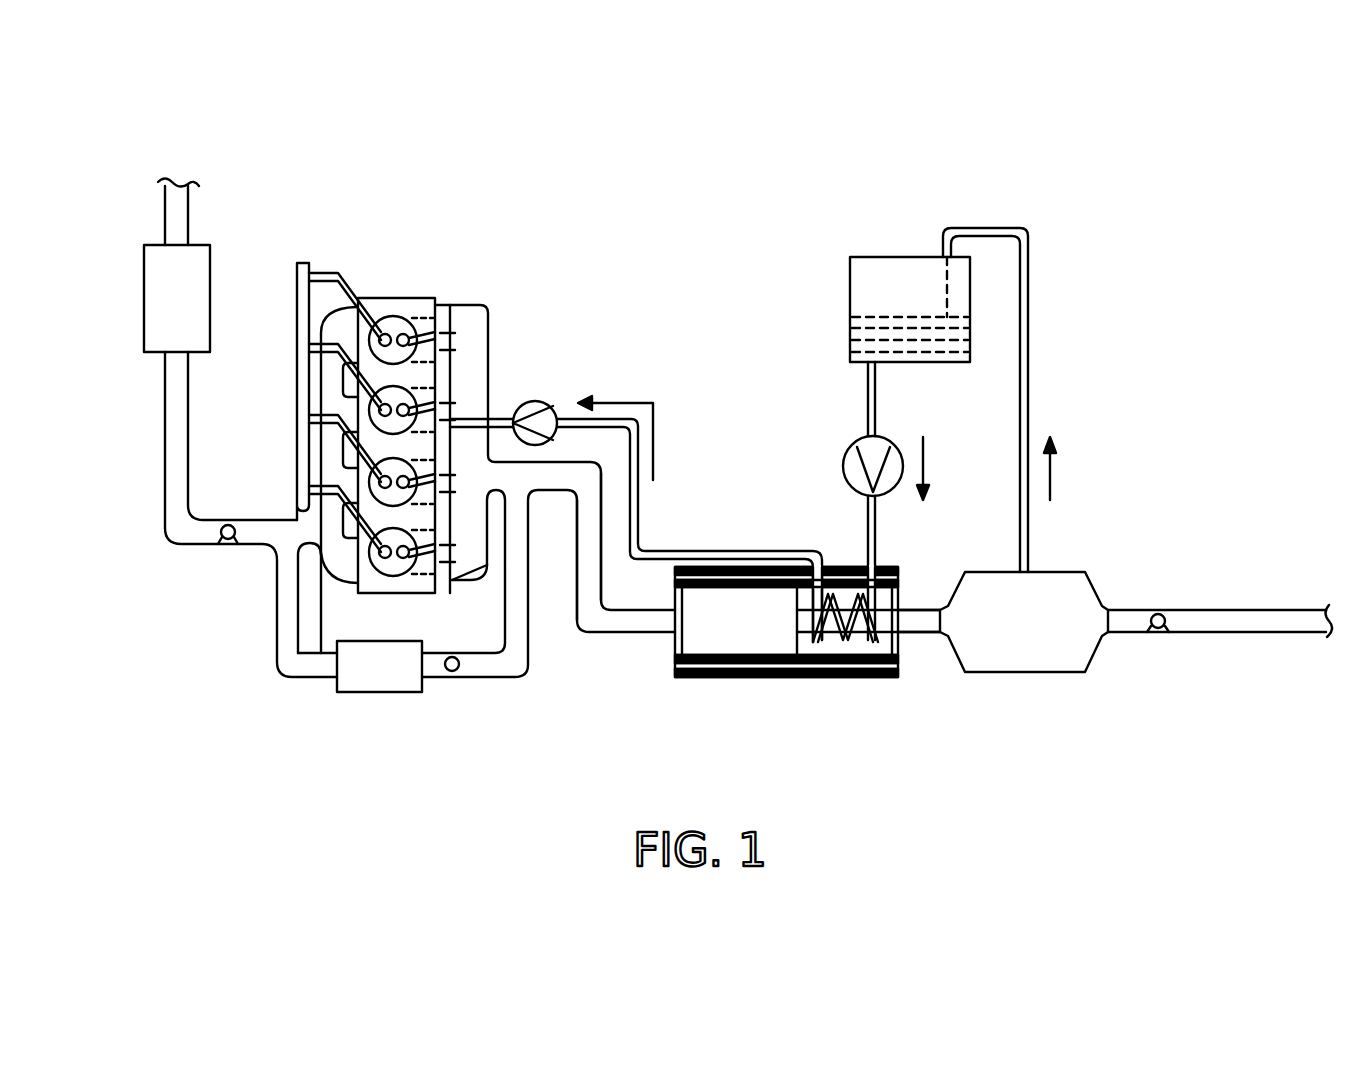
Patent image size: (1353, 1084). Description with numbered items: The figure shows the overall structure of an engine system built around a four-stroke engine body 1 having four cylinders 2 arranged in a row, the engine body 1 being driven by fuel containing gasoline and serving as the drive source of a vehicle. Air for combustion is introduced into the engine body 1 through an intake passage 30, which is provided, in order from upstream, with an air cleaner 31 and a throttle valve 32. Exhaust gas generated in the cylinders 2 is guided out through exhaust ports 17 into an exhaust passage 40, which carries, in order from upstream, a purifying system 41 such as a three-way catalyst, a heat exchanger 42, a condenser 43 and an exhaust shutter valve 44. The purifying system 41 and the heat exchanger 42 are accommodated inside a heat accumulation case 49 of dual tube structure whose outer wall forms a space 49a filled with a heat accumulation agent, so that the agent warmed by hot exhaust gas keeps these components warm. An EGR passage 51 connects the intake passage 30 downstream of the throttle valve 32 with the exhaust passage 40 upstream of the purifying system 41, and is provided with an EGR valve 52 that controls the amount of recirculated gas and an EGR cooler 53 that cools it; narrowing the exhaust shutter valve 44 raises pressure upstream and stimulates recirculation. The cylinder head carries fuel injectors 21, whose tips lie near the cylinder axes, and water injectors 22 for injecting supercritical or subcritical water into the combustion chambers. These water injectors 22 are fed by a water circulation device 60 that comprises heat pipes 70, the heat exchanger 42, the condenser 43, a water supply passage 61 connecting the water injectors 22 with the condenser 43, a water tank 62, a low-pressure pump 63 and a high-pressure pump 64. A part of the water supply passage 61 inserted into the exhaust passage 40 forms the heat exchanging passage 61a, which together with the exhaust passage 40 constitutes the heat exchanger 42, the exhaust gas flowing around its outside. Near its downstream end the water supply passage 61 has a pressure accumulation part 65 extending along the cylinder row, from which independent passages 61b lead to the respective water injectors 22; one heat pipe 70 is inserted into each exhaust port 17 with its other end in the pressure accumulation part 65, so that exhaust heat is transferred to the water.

The engine body 1 is at (478, 245).
The cylinder 2 is at (397, 568).
The exhaust port 17 is at (428, 300).
The fuel injector 21 is at (385, 330).
The water injector 22 is at (407, 330).
The intake passage 30 is at (165, 437).
The air cleaner 31 is at (143, 296).
The throttle valve 32 is at (240, 548).
The exhaust passage 40 is at (580, 612).
The purifying system 41 is at (695, 648).
The heat exchanger 42 is at (838, 660).
The condenser 43 is at (1020, 652).
The exhaust shutter valve 44 is at (1150, 632).
The heat accumulation case 49 is at (797, 667).
The space 49a is at (748, 666).
The EGR passage 51 is at (500, 678).
The EGR valve 52 is at (450, 672).
The EGR cooler 53 is at (372, 692).
The water circulation device 60 is at (1165, 318).
The water supply passage 61 is at (700, 551).
The heat exchanging passage 61a is at (907, 610).
The independent passage 61b is at (458, 576).
The water tank 62 is at (890, 257).
The low-pressure pump 63 is at (843, 462).
The high-pressure pump 64 is at (548, 402).
The pressure accumulation part 65 is at (437, 578).
The heat pipe 70 is at (447, 347).